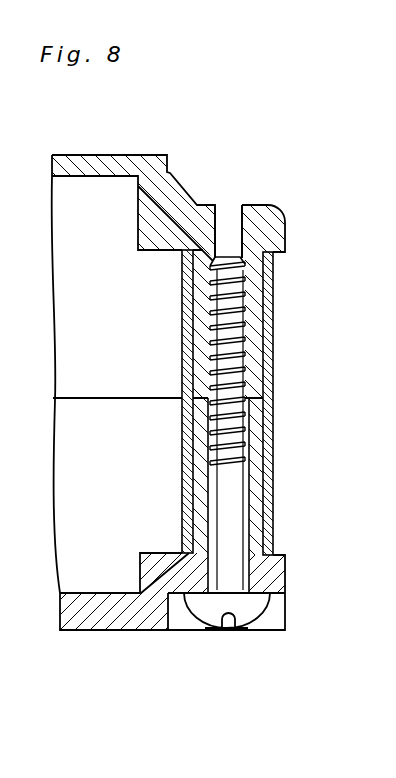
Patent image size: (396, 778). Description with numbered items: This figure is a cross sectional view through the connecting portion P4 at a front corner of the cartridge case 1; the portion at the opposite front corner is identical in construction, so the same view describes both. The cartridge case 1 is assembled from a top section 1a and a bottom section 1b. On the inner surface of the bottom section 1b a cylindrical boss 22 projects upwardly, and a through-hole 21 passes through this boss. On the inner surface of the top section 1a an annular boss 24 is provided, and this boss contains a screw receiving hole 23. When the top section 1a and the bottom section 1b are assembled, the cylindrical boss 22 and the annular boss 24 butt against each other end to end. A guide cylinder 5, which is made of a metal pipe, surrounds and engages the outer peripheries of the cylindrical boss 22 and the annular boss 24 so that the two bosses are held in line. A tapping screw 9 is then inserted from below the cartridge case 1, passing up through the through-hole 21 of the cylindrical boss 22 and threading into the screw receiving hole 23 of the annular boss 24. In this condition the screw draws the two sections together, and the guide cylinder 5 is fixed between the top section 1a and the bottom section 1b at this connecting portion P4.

The cartridge case 1 is at (189, 160).
The top section 1a is at (96, 156).
The bottom section 1b is at (85, 623).
The guide cylinder 5 is at (273, 473).
The tapping screw 9 is at (205, 612).
The through-hole 21 is at (233, 545).
The cylindrical boss 22 is at (200, 485).
The screw receiving hole 23 is at (216, 221).
The annular boss 24 is at (252, 368).
The connecting portion P4 is at (276, 306).